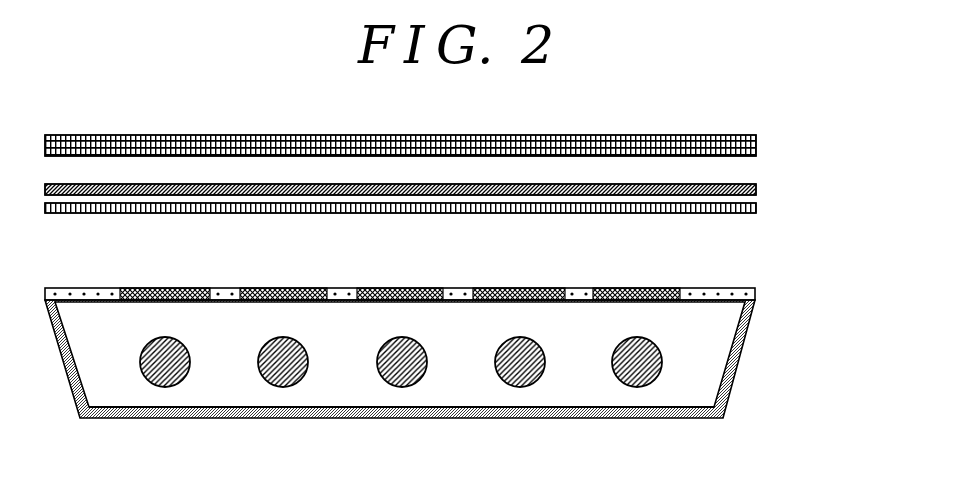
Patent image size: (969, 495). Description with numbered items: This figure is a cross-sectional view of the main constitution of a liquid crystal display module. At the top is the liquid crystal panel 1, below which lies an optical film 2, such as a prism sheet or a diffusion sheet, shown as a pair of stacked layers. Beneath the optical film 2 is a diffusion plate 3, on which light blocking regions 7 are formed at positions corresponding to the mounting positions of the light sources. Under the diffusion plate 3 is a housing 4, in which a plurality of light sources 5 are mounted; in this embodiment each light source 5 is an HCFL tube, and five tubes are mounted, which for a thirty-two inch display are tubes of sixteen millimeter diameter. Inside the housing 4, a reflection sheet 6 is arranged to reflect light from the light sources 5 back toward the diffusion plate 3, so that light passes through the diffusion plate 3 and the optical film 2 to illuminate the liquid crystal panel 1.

The liquid crystal panel 1 is at (735, 135).
The optical film 2 is at (769, 183).
The diffusion plate 3 is at (742, 292).
The light blocking regions 7 is at (658, 288).
The housing 4 is at (697, 418).
The light source 5 is at (660, 353).
The reflection sheet 6 is at (683, 407).